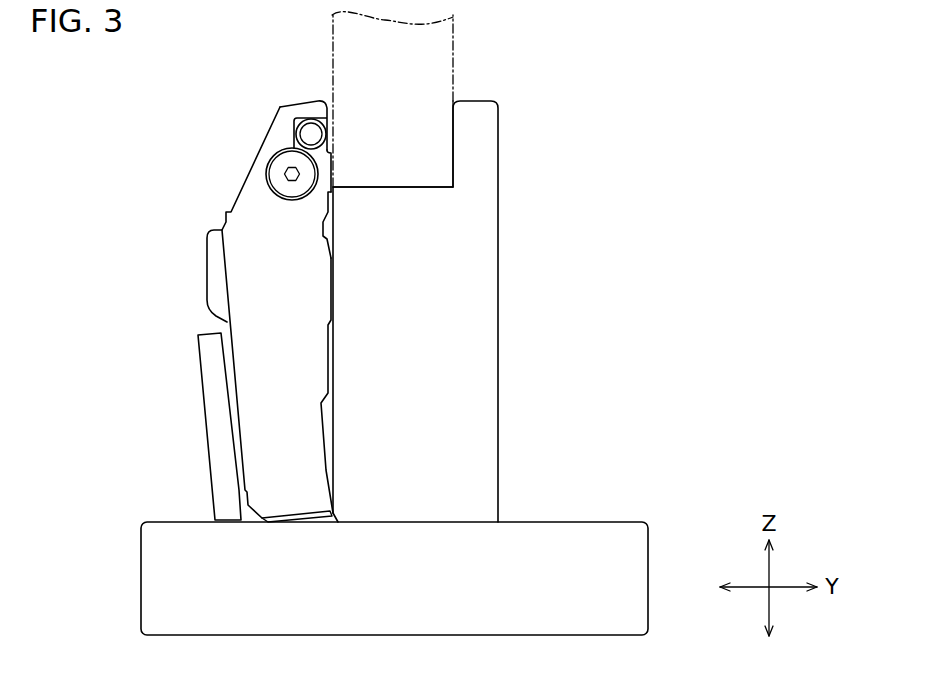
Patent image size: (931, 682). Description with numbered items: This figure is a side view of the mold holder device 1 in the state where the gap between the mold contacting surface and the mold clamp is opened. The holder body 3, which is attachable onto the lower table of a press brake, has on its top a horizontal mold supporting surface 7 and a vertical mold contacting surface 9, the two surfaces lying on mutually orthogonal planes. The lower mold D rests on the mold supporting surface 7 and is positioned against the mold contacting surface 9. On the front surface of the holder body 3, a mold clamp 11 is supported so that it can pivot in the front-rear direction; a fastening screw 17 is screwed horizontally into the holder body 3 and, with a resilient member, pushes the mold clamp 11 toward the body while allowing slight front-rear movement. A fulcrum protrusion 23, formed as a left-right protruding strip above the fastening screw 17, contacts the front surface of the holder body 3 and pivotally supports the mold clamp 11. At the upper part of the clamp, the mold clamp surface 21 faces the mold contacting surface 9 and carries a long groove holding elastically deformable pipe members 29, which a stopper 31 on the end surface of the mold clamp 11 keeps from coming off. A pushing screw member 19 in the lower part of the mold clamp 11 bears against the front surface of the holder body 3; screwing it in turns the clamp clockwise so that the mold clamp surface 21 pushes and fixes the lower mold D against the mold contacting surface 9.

The mold holder device 1 is at (553, 281).
The holder body 3 is at (408, 357).
The lower mold D is at (443, 47).
The mold supporting surface 7 is at (409, 188).
The mold contacting surface 9 is at (440, 150).
The mold clamp 11 is at (293, 357).
The fastening screw 17 is at (220, 290).
The pushing screw member 19 is at (215, 399).
The mold clamp surface 21 is at (329, 158).
The fulcrum protrusion 23 is at (328, 200).
The pipe member 29 is at (339, 129).
The stopper 31 is at (275, 177).